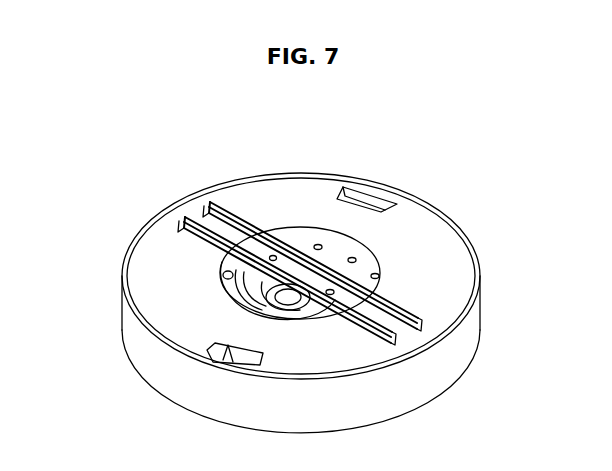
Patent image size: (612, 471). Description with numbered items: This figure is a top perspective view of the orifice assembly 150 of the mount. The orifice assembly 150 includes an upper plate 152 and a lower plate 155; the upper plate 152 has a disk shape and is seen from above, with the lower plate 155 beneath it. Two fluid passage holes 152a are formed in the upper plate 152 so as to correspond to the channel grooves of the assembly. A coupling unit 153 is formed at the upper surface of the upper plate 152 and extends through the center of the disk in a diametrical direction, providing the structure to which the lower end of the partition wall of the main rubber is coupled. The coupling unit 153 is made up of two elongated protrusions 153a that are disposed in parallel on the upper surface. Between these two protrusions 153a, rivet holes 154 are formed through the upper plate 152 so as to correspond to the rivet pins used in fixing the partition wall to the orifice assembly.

The orifice assembly 150 is at (480, 216).
The upper plate 152 is at (402, 242).
The fluid passage holes 152a is at (237, 352).
The coupling unit 153 is at (247, 238).
The elongated protrusions 153a is at (419, 331).
The rivet holes 154 is at (273, 255).
The lower plate 155 is at (448, 355).